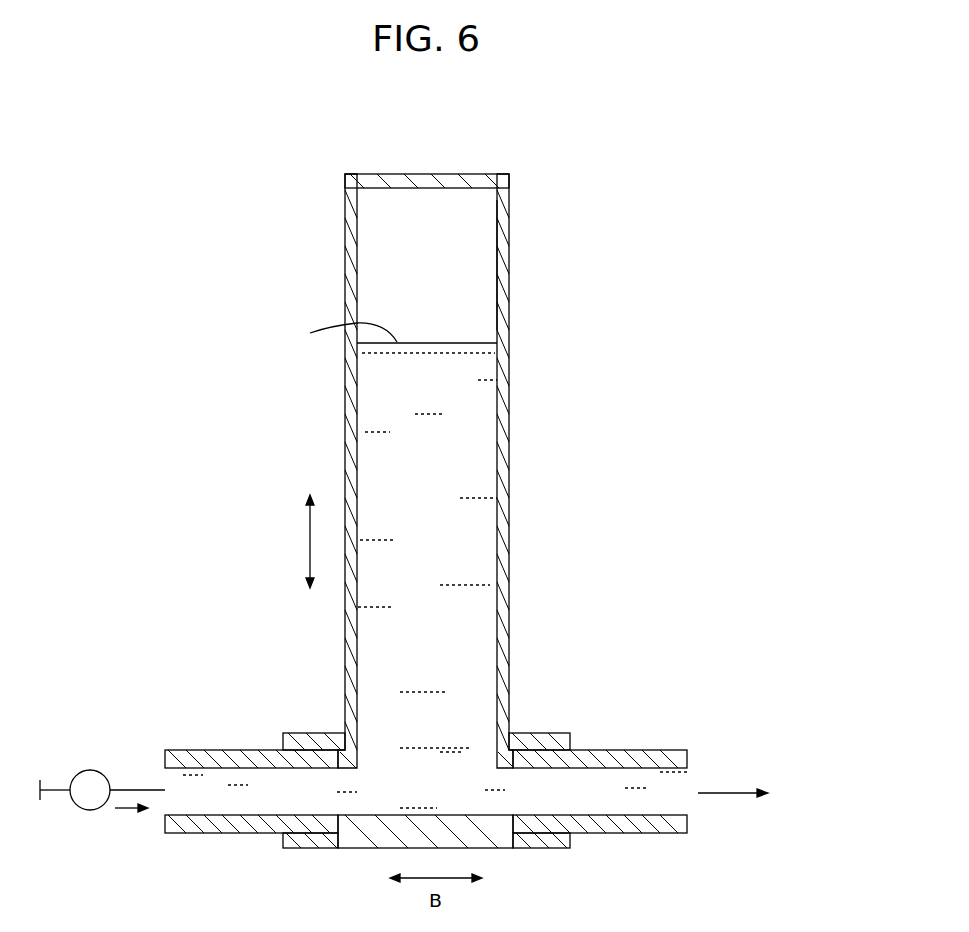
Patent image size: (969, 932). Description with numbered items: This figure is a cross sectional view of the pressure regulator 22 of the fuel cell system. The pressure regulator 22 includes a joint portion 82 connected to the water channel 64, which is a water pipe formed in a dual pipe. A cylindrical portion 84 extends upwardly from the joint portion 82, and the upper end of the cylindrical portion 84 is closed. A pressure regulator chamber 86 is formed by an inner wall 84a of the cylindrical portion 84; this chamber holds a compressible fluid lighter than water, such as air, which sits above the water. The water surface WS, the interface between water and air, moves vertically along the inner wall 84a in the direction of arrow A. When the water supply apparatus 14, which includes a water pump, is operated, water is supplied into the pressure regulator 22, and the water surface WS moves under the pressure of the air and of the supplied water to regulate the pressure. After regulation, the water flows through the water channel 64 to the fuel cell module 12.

The pressure regulator 22 is at (530, 176).
The cylindrical portion 84 is at (511, 401).
The inner wall 84a is at (497, 270).
The pressure regulator chamber 86 is at (473, 215).
The joint portion 82 is at (549, 745).
The water channel 64 is at (633, 750).
The water supply apparatus 14 is at (89, 770).
The fuel cell module 12 is at (785, 762).